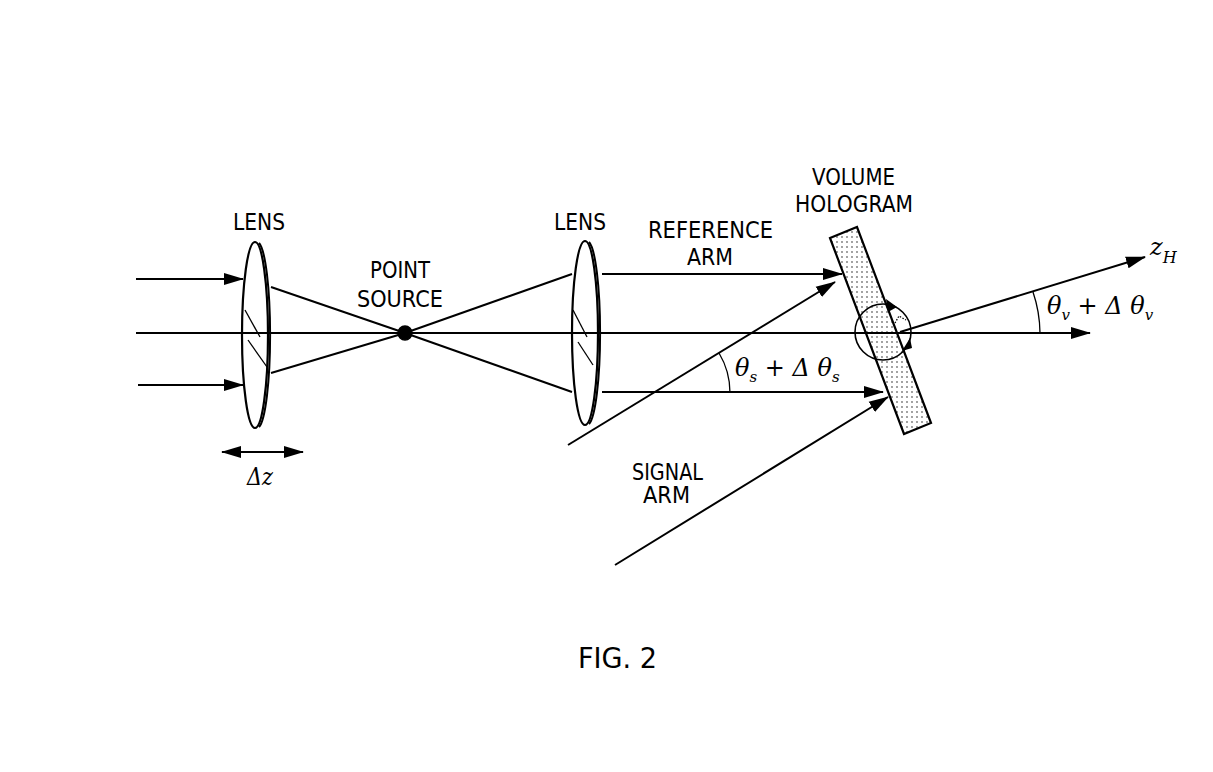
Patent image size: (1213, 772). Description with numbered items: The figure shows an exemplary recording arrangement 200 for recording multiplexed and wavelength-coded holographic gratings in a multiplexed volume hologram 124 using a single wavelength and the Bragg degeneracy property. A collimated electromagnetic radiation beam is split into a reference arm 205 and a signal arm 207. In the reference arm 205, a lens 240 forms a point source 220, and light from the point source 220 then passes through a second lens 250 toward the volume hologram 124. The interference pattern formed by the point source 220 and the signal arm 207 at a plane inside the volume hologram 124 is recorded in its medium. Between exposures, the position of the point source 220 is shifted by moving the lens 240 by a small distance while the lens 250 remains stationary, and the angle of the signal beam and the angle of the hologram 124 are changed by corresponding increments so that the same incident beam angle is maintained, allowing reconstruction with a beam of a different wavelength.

The recording arrangement 200 is at (724, 78).
The reference arm 205 is at (140, 385).
The lens 240 is at (243, 267).
The point source 220 is at (410, 340).
The lens 250 is at (578, 420).
The signal arm 207 is at (697, 515).
The multiplexed volume hologram 124 is at (932, 410).